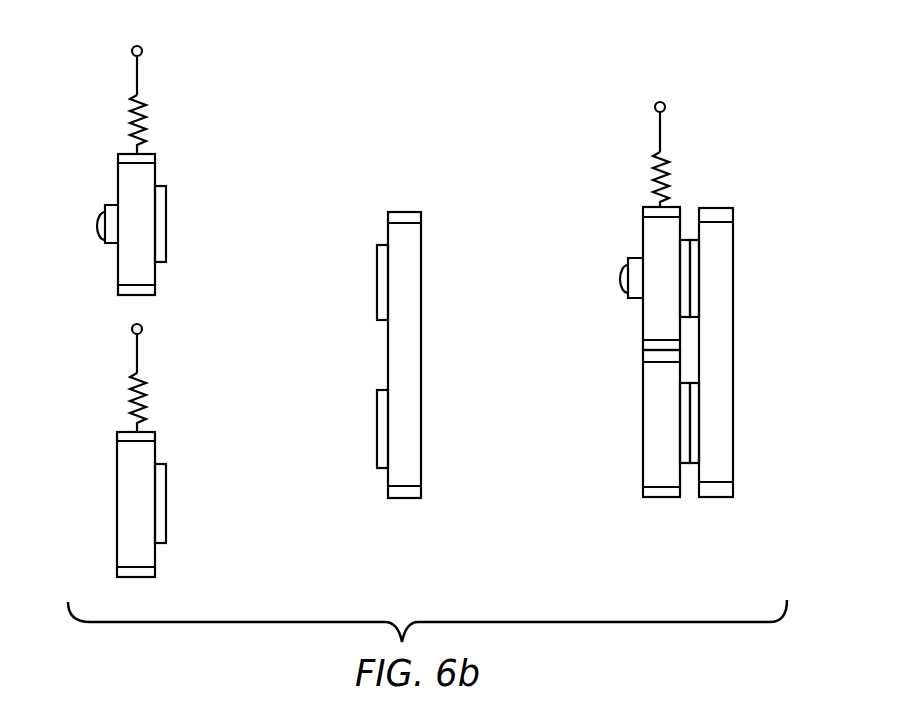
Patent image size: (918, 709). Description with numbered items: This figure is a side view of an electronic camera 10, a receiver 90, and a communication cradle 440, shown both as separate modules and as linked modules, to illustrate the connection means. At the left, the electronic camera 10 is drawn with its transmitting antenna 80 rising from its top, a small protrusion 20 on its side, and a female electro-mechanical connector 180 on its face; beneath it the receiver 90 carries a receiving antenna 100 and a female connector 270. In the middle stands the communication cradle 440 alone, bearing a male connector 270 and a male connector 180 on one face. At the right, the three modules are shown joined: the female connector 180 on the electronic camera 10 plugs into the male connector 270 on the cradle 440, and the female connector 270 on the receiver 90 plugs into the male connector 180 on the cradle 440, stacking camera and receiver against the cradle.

The electronic camera 10 is at (153, 172).
The button 20 is at (100, 246).
The transmitting antenna 80 is at (146, 115).
The receiver 90 is at (152, 452).
The receiving antenna 100 is at (145, 397).
The electro-mechanical connector (female) 180 is at (166, 210).
The electro-mechanical connector (male) 270 is at (165, 532).
The communication cradle 440 is at (421, 253).